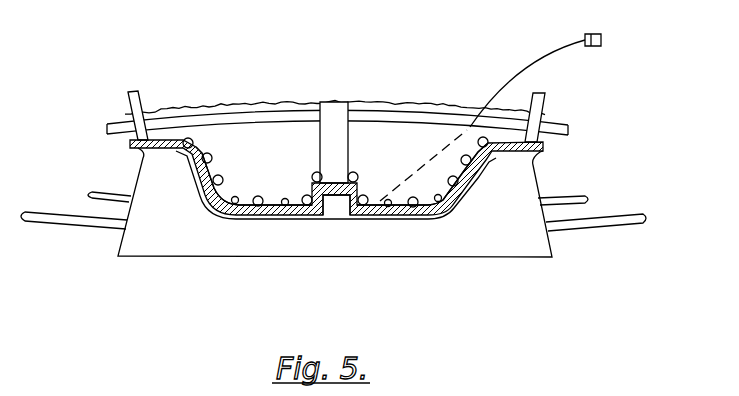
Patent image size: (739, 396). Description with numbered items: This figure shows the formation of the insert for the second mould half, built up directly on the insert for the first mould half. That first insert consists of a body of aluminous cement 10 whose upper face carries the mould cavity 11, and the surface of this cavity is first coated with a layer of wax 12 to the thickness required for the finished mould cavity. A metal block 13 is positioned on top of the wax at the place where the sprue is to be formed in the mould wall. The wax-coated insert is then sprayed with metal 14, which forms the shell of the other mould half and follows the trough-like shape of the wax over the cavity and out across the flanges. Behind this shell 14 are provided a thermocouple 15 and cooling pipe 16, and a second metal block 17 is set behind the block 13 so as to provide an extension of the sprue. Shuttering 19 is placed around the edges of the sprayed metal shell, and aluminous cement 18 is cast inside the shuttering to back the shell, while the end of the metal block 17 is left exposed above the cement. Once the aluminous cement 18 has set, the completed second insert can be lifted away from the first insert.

The aluminous cement 10 is at (270, 243).
The mould cavity 11 is at (450, 203).
The layer of wax 12 is at (203, 184).
The metal block 13 is at (338, 200).
The metal 14 is at (393, 210).
The thermocouple 15 is at (422, 213).
The cooling pipe 16 is at (232, 208).
The metal block 17 is at (328, 122).
The aluminous cement 18 is at (243, 140).
The shuttering 19 is at (540, 100).